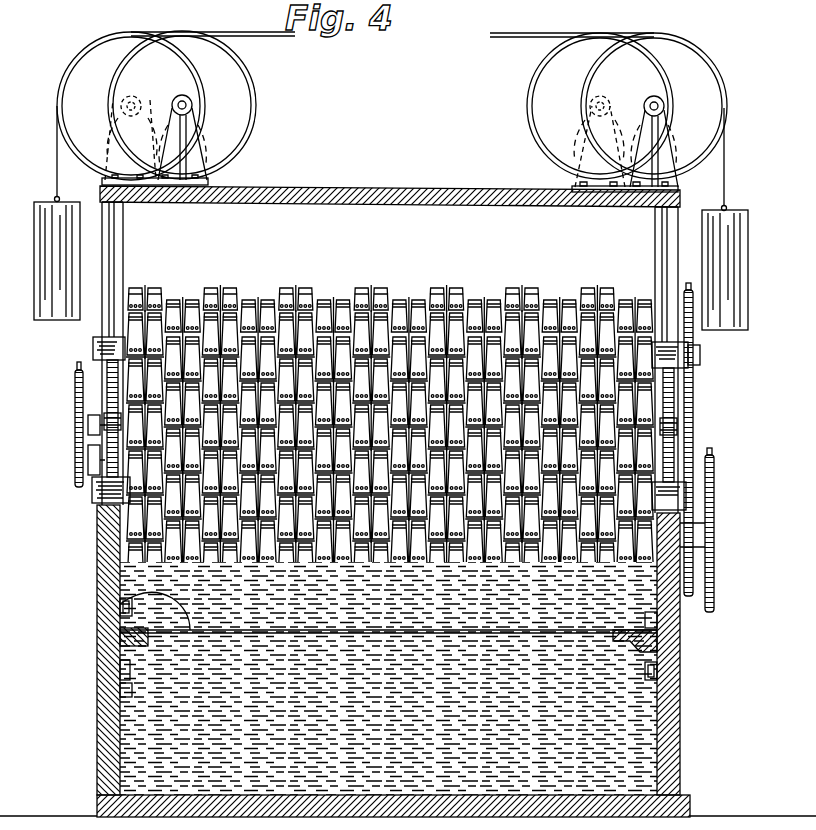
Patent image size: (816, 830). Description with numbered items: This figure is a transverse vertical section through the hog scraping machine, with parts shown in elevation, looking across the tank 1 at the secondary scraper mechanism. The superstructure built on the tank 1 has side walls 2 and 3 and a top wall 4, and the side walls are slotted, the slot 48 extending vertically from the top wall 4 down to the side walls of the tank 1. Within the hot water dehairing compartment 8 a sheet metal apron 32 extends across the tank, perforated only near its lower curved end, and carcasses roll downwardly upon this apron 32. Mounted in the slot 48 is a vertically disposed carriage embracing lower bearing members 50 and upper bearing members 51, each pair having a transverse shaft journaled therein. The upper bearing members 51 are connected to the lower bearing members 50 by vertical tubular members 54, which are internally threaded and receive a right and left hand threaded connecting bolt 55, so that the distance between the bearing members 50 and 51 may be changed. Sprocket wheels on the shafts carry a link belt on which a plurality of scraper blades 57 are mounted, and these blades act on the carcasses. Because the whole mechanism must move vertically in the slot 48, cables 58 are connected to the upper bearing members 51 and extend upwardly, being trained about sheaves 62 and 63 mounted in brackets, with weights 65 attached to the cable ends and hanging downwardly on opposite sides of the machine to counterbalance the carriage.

The tank 1 is at (684, 696).
The side wall 2 is at (672, 262).
The side wall 3 is at (100, 310).
The top wall 4 is at (398, 190).
The dehairing compartment 8 is at (120, 722).
The sheet metal apron 32 is at (160, 626).
The slot 48 is at (118, 266).
The lower bearing member 50 is at (106, 492).
The upper bearing member 51 is at (93, 348).
The tubular member 54 is at (108, 402).
The connecting bolt 55 is at (108, 420).
The scraper blade 57 is at (352, 300).
The cable 58 is at (56, 156).
The sheave 62 is at (390, 109).
The sheave 63 is at (392, 109).
The weight 65 is at (50, 246).